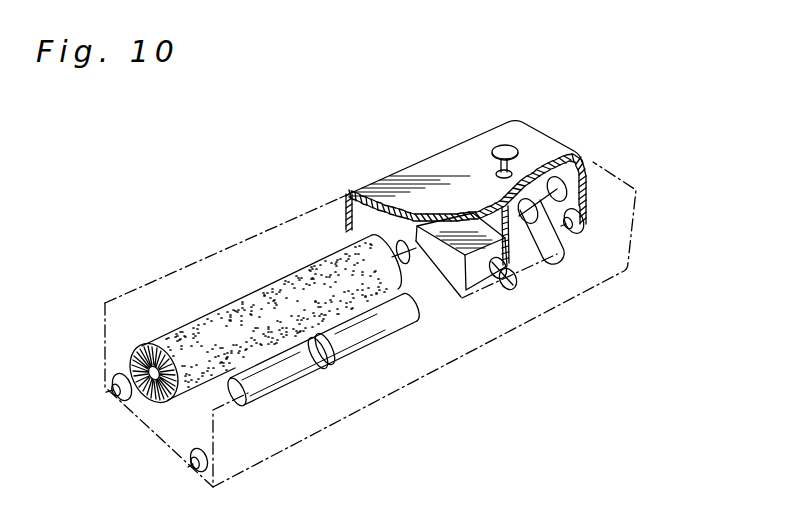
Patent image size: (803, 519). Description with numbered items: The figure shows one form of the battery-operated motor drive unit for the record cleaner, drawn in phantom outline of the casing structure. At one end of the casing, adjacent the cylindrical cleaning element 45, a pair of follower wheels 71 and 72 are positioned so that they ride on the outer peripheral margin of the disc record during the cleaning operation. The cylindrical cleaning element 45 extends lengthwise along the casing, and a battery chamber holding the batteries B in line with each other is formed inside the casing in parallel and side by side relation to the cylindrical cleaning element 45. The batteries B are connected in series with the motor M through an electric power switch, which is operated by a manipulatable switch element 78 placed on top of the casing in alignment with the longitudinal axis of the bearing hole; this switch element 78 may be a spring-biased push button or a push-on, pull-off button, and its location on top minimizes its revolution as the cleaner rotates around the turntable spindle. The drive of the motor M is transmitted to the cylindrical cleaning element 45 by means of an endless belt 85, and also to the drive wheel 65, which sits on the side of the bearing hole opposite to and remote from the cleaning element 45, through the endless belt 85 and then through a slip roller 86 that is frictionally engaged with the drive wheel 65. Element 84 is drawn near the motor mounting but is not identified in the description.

The cylindrical cleaning element 45 is at (243, 296).
The follower wheel 72 is at (122, 401).
The follower wheel 71 is at (192, 461).
The batteries B is at (358, 351).
The motor M is at (450, 227).
The manipulatable switch element 78 is at (518, 147).
The slip roller 86 is at (568, 177).
The drive wheel 65 is at (583, 229).
The endless belt 85 is at (547, 258).
The motor base plate 84 is at (462, 298).